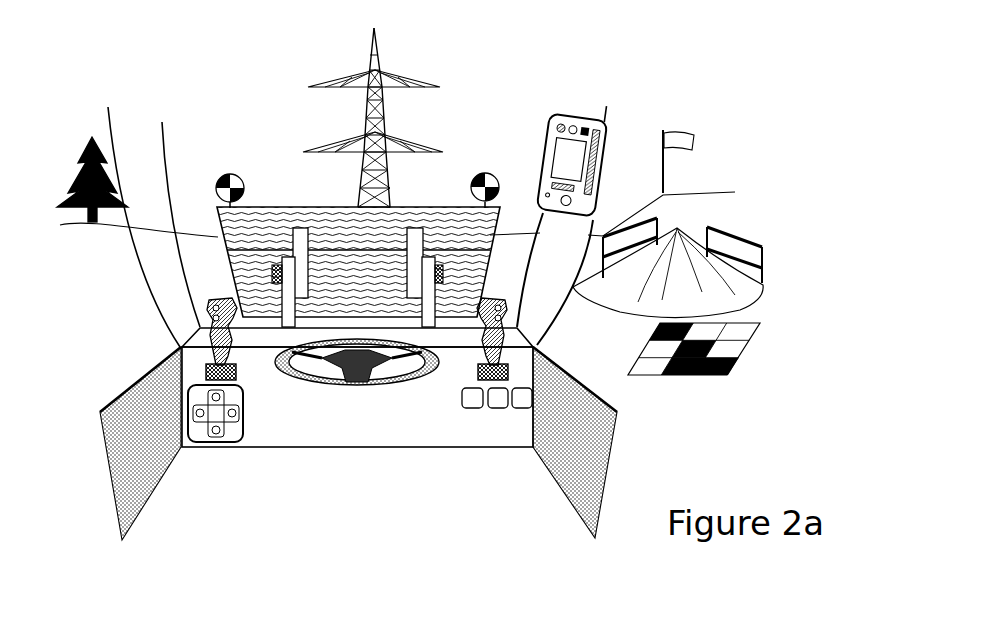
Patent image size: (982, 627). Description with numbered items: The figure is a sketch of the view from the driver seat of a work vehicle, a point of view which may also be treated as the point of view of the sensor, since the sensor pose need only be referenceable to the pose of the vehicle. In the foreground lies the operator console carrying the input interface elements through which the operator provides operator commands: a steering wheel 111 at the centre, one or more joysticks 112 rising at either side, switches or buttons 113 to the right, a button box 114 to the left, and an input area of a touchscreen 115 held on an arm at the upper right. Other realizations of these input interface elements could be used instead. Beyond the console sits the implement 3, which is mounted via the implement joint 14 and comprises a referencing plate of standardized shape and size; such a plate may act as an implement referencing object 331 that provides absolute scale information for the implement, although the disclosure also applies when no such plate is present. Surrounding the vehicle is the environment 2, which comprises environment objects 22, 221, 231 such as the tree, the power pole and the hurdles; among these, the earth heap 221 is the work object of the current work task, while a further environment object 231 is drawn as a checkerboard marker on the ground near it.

The environment 2 is at (93, 34).
The implement 3 is at (303, 217).
The implement joint 14 is at (433, 270).
The environment object 22 is at (93, 140).
The touchscreen 115 is at (565, 112).
The implement referencing object 331 is at (218, 195).
The earth heap 221 is at (633, 315).
The environment object 231 is at (750, 342).
The steering wheel 111 is at (337, 383).
The joystick 112 is at (236, 378).
The switches or buttons 113 is at (500, 408).
The button box 114 is at (233, 442).